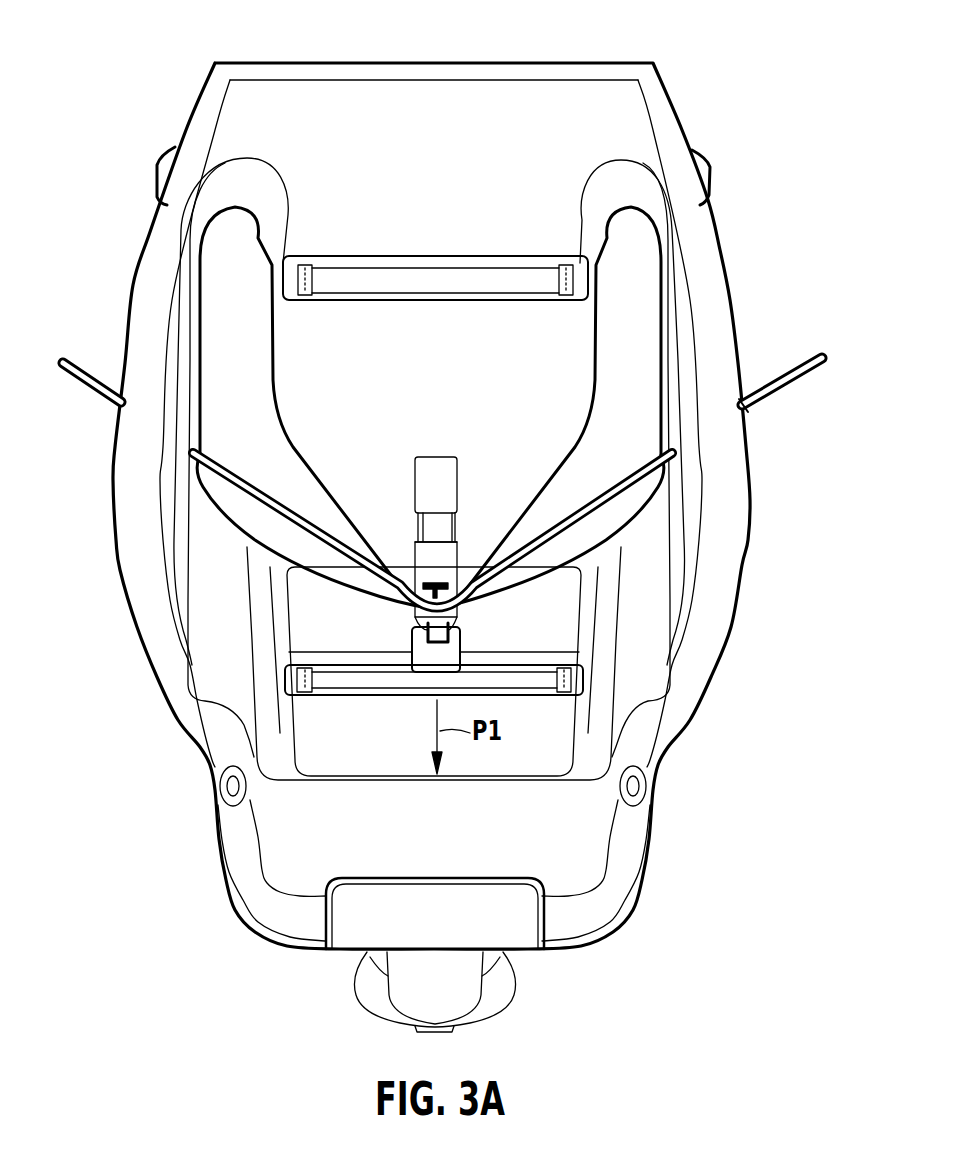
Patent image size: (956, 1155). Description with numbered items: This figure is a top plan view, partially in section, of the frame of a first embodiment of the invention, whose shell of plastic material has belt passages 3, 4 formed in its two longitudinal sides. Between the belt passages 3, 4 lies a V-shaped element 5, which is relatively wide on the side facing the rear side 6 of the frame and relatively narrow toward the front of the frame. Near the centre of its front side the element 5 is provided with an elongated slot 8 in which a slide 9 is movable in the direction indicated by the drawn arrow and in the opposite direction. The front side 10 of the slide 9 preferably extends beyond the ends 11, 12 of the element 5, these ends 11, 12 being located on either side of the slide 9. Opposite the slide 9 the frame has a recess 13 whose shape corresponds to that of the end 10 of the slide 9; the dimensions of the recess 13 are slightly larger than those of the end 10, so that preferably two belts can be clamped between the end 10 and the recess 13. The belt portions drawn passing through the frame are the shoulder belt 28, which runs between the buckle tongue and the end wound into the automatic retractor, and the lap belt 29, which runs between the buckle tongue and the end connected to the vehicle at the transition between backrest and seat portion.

The belt passage 3 is at (637, 292).
The belt passage 4 is at (223, 282).
The V-shaped element 5 is at (486, 352).
The rear side 6 is at (515, 58).
The elongated slot 8 is at (458, 518).
The slide 9 is at (443, 587).
The front side of the slide 10 is at (413, 600).
The end of the element 11 is at (407, 590).
The end of the element 12 is at (466, 583).
The recess 13 is at (455, 632).
The shoulder belt 28 is at (785, 374).
The lap belt 29 is at (763, 403).